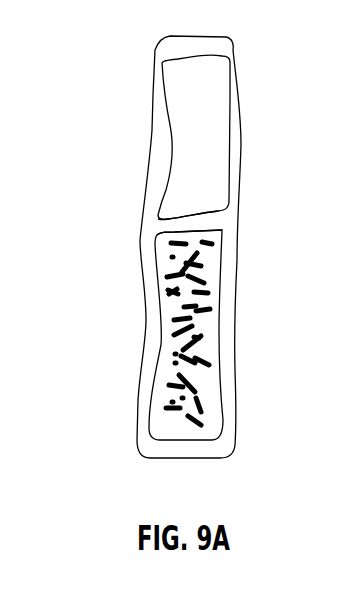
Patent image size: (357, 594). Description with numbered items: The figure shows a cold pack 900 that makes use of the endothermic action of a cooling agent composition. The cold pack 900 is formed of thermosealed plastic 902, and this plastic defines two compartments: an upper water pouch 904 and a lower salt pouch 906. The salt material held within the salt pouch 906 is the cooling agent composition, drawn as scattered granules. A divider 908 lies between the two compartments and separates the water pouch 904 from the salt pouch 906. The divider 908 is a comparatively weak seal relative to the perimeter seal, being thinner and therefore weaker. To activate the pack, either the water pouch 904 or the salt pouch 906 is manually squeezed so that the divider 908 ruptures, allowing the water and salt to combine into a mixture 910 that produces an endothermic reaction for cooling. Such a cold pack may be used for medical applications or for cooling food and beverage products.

The cold pack 900 is at (150, 93).
The thermosealed plastic 902 is at (138, 252).
The water pouch 904 is at (222, 95).
The salt pouch 906 is at (212, 350).
The divider 908 is at (215, 220).
The mixture 910 is at (148, 330).